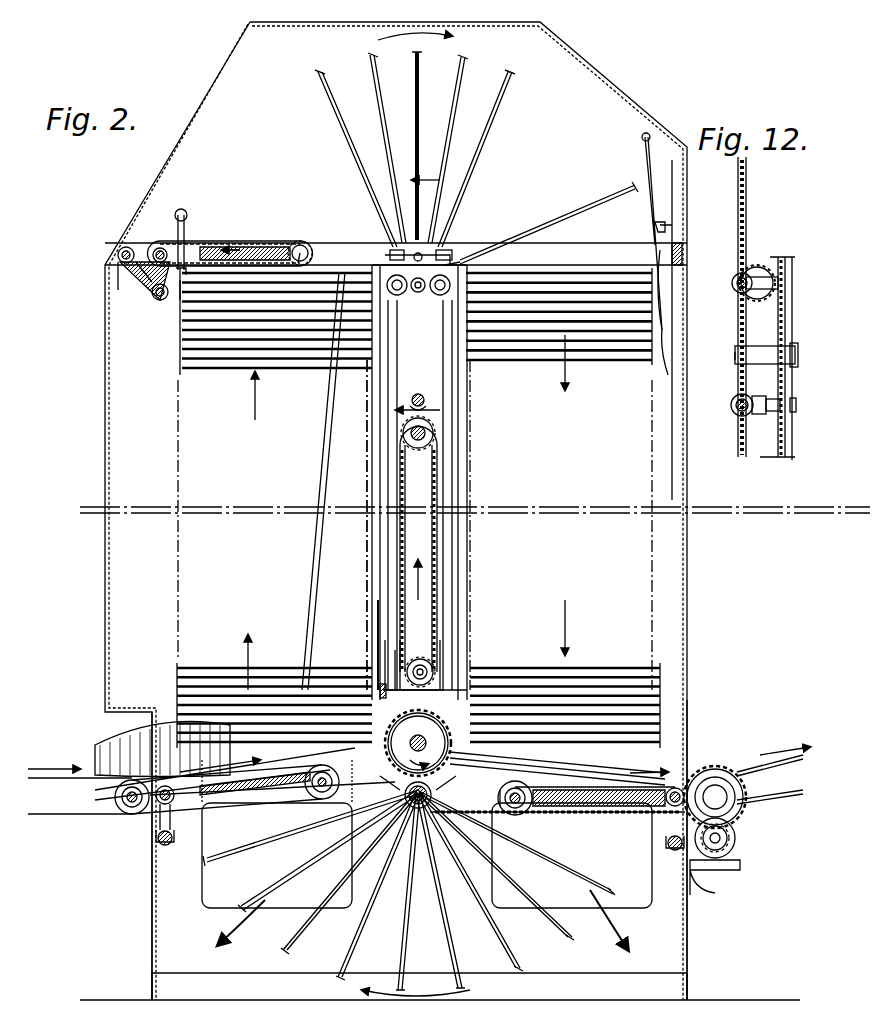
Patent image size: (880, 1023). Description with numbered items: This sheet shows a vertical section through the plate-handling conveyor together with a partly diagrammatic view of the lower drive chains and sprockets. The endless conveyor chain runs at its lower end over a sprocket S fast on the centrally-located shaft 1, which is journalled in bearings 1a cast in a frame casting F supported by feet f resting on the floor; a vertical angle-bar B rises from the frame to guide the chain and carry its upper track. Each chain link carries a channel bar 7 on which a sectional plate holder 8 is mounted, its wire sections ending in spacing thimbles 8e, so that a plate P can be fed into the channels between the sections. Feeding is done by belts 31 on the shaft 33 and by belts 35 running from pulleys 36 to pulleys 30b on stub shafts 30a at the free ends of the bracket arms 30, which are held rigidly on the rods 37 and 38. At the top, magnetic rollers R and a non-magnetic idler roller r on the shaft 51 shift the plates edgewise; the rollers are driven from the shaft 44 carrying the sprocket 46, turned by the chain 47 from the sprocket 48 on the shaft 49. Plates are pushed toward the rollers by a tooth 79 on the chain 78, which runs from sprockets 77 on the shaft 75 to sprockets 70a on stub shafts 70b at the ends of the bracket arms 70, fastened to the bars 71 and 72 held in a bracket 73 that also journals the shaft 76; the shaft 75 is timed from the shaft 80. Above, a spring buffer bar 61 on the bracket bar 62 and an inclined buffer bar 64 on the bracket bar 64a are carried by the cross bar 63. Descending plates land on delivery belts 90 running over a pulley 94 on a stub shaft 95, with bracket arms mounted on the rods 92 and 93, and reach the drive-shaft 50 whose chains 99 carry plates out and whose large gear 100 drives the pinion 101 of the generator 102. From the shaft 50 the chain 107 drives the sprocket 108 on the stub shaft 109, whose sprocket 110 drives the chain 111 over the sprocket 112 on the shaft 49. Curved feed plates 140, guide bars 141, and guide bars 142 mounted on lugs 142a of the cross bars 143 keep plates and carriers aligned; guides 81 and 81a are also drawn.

In FIG. 12, the centrally-located shaft 1 is at (740, 350).
In FIG. 12, the bearings 1a is at (780, 365).
In FIG. 2, the channel bar 7 is at (370, 350).
In FIG. 2, the sectional plate holder 8 is at (480, 122).
In FIG. 2, the spacing thimbles 8e is at (468, 60).
In FIG. 2, the bracket arms 30 is at (232, 792).
In FIG. 2, the stub shafts 30a is at (322, 800).
In FIG. 2, the pulleys 30b is at (296, 790).
In FIG. 2, the belts 31 is at (60, 778).
In FIG. 2, the shaft 33 is at (115, 797).
In FIG. 2, the belts 35 is at (176, 820).
In FIG. 2, the pulleys 36 is at (126, 806).
In FIG. 2, the rod 37 is at (160, 805).
In FIG. 2, the rod 38 is at (160, 846).
In FIG. 2, the shaft 44 is at (428, 428).
In FIG. 2, the sprocket 46 is at (434, 436).
In FIG. 2, the chain 47 is at (438, 476).
In FIG. 12, the chain 47 is at (748, 228).
In FIG. 2, the sprocket 48 is at (430, 665).
In FIG. 12, the sprocket 48 is at (734, 280).
In FIG. 2, the shaft 49 is at (426, 672).
In FIG. 12, the shaft 49 is at (738, 290).
In FIG. 2, the drive-shaft 50 is at (714, 790).
In FIG. 2, the shaft 51 is at (418, 292).
In FIG. 2, the spring buffer bar 61 is at (672, 225).
In FIG. 2, the bracket bar 62 is at (682, 258).
In FIG. 2, the cross bar 63 is at (540, 252).
In FIG. 2, the flexible spring buffer bar 64 is at (660, 214).
In FIG. 2, the bracket bar 64a is at (670, 142).
In FIG. 2, the bracket arms 70 is at (222, 247).
In FIG. 2, the sprockets 70a is at (306, 258).
In FIG. 2, the stub shafts 70b is at (300, 244).
In FIG. 2, the bar 71 is at (118, 255).
In FIG. 2, the bar 72 is at (156, 300).
In FIG. 2, the bracket 73 is at (140, 280).
In FIG. 2, the shaft 75 is at (150, 270).
In FIG. 2, the shaft 76 is at (181, 208).
In FIG. 2, the sprockets 77 is at (160, 247).
In FIG. 2, the chain 78 is at (250, 242).
In FIG. 2, the tooth or projection 79 is at (128, 290).
In FIG. 2, the shaft 80 is at (410, 400).
In FIG. 2, the guide 81 is at (184, 240).
In FIG. 2, the guide foot 81a is at (180, 300).
In FIG. 2, the delivery belts 90 is at (596, 812).
In FIG. 2, the rod 92 is at (680, 790).
In FIG. 2, the rod 93 is at (674, 852).
In FIG. 2, the pulley 94 is at (528, 804).
In FIG. 2, the stub shaft 95 is at (520, 805).
In FIG. 2, the chains 99 is at (776, 800).
In FIG. 2, the large gear 100 is at (740, 808).
In FIG. 2, the pinion 101 is at (716, 850).
In FIG. 2, the generator 102 is at (726, 840).
In FIG. 2, the chain 107 is at (500, 812).
In FIG. 12, the chain 107 is at (765, 415).
In FIG. 12, the sprocket 108 is at (766, 408).
In FIG. 12, the stub shaft 109 is at (752, 410).
In FIG. 2, the sprocket 110 is at (419, 806).
In FIG. 12, the sprocket 110 is at (742, 400).
In FIG. 2, the chain 111 is at (424, 660).
In FIG. 12, the chain 111 is at (748, 390).
In FIG. 12, the sprocket 112 is at (764, 268).
In FIG. 2, the curved feed plates 140 is at (108, 748).
In FIG. 2, the vertical buffer or guide bars 141 is at (322, 486).
In FIG. 2, the vertical guide bars 142 is at (378, 590).
In FIG. 2, the projecting lugs 142a is at (380, 686).
In FIG. 2, the cross bars 143 is at (383, 650).
In FIG. 2, the angle-bar B is at (366, 466).
In FIG. 2, the frame casting F is at (419, 850).
In FIG. 12, the frame casting F is at (788, 258).
In FIG. 2, the feet f is at (158, 980).
In FIG. 2, the plate P is at (225, 358).
In FIG. 2, the magnetic rollers R is at (392, 258).
In FIG. 2, the non-magnetic idler roller r is at (421, 255).
In FIG. 2, the sprocket S is at (418, 743).